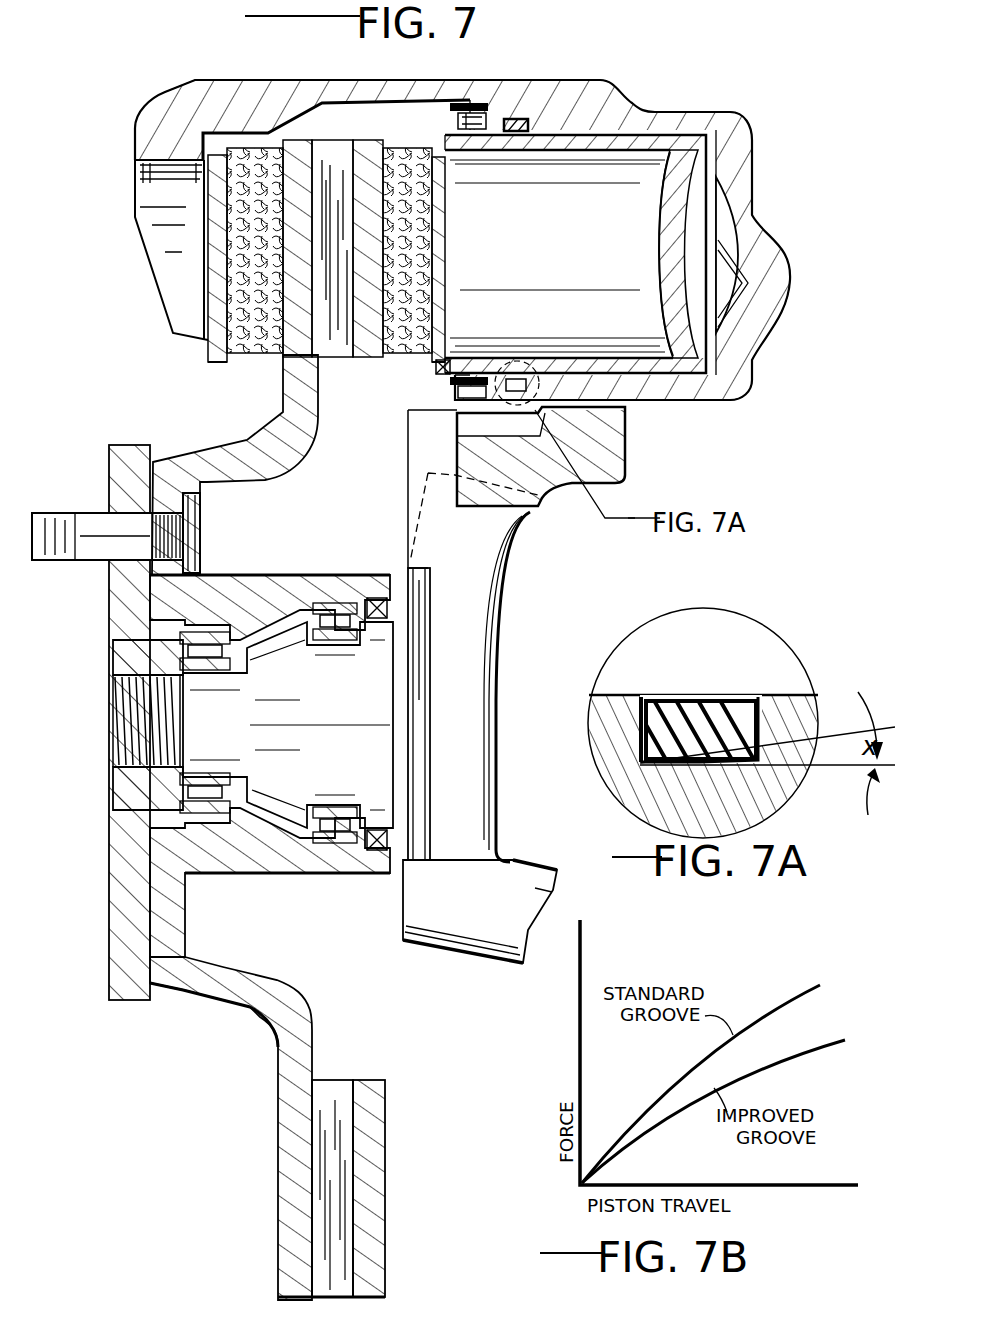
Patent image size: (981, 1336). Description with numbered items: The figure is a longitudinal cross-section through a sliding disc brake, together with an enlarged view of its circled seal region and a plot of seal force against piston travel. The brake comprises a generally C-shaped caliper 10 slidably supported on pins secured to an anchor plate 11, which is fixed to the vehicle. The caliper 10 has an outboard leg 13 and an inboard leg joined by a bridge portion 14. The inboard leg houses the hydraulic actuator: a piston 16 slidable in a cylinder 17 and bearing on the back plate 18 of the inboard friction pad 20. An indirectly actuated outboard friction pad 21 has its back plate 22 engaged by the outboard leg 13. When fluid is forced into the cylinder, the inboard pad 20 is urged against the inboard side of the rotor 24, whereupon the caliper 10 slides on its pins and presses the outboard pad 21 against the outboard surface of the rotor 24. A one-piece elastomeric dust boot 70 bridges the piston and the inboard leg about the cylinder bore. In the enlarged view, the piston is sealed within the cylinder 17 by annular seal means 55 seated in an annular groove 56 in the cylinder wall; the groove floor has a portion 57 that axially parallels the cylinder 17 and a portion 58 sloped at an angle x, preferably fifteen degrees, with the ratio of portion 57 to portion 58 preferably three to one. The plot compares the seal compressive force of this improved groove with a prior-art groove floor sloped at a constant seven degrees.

In FIG. 7, the caliper 10 is at (617, 68).
In FIG. 7, the anchor plate 11 is at (638, 458).
In FIG. 7, the outboard leg 13 is at (165, 238).
In FIG. 7, the bridge portion 14 is at (445, 92).
In FIG. 7, the piston 16 is at (660, 205).
In FIG. 7, the cylinder 17 is at (676, 138).
In FIG. 7A, the cylinder 17 is at (785, 695).
In FIG. 7, the back plate 18 is at (442, 368).
In FIG. 7, the inboard friction pad 20 is at (450, 212).
In FIG. 7, the outboard friction pad 21 is at (240, 152).
In FIG. 7, the back plate 22 is at (215, 345).
In FIG. 7, the rotor 24 is at (262, 470).
In FIG. 7, the annular seal means 55 is at (527, 135).
In FIG. 7A, the annular seal means 55 is at (705, 705).
In FIG. 7A, the annular groove 56 is at (634, 705).
In FIG. 7A, the floor portion 57 is at (658, 770).
In FIG. 7A, the sloped floor portion 58 is at (770, 775).
In FIG. 7, the piston dust boot 70 is at (445, 122).